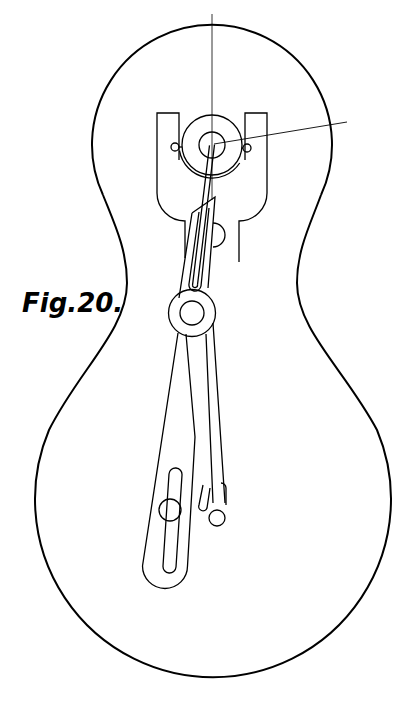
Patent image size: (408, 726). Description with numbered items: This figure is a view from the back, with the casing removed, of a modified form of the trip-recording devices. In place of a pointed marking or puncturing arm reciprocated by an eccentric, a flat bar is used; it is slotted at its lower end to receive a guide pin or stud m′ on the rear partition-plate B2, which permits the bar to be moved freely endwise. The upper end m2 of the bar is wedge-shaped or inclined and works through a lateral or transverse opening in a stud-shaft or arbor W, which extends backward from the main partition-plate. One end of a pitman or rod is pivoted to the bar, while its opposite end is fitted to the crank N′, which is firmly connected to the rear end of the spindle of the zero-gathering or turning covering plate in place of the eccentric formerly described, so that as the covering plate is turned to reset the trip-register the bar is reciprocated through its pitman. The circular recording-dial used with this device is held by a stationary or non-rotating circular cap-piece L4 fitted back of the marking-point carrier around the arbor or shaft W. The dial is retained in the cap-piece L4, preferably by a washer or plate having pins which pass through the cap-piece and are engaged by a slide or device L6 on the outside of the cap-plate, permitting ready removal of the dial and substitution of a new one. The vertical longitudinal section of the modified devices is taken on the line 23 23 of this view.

The section line 23 23 is at (214, 148).
The upper end of the bar m2 is at (215, 142).
The pins v is at (212, 151).
The slide L6 is at (212, 187).
The cap-piece L4 is at (212, 110).
The stud-shaft or arbor W is at (380, 135).
The rear partition-plate B2 is at (213, 436).
The guide pin or stud m′ is at (170, 510).
The crank N′ is at (221, 504).